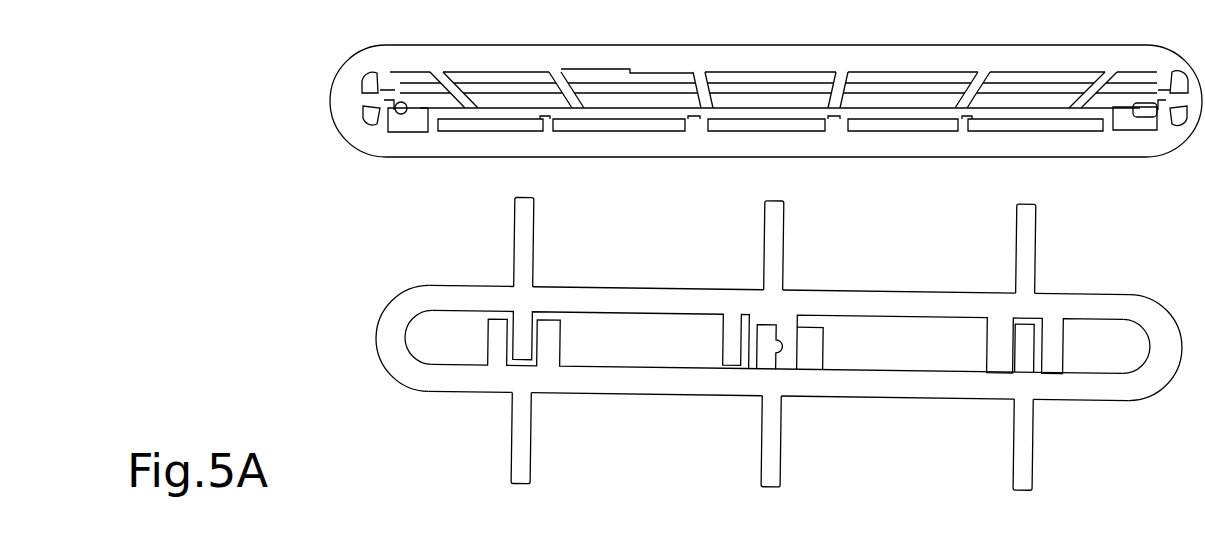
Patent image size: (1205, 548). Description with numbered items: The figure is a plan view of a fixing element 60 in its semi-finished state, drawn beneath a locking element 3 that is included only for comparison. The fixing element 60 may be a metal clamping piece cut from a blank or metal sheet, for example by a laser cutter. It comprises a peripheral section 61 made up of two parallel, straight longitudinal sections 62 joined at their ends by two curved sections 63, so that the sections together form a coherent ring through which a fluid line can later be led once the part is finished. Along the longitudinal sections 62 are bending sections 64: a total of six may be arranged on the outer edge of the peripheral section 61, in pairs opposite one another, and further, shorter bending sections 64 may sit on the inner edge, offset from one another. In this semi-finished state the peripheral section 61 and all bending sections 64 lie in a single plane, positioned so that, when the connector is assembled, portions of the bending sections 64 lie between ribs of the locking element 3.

The locking element 3 is at (349, 94).
The fixing element 60 is at (338, 280).
The peripheral section 61 is at (732, 366).
The longitudinal section 62 is at (458, 382).
The curved section 63 is at (385, 344).
The bending section 64 is at (521, 231).